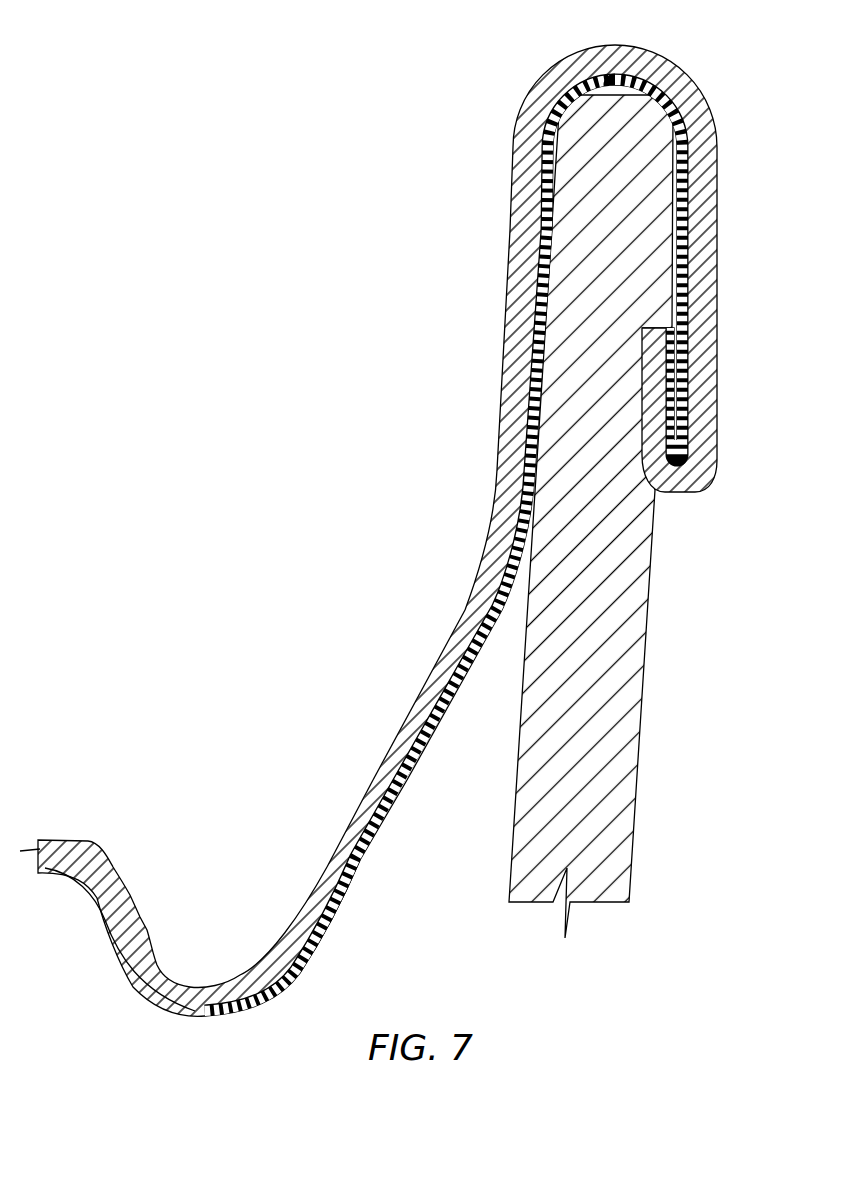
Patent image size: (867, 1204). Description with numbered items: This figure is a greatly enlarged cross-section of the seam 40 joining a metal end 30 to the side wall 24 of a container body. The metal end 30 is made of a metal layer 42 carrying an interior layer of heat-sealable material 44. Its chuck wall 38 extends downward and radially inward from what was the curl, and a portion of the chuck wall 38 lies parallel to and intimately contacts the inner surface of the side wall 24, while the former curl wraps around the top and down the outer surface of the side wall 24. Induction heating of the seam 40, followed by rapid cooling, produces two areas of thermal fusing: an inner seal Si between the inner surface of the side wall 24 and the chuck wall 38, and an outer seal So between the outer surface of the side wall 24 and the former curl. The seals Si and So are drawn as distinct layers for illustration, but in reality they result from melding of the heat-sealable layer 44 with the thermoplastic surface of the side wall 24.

The container body side wall 24 is at (640, 560).
The metal end 30 is at (296, 890).
The chuck wall 38 is at (496, 443).
The seam 40 is at (723, 246).
The metal layer 42 is at (378, 770).
The heat-sealable material layer 44 is at (332, 933).
The inner seal Si is at (534, 255).
The outer seal So is at (669, 80).